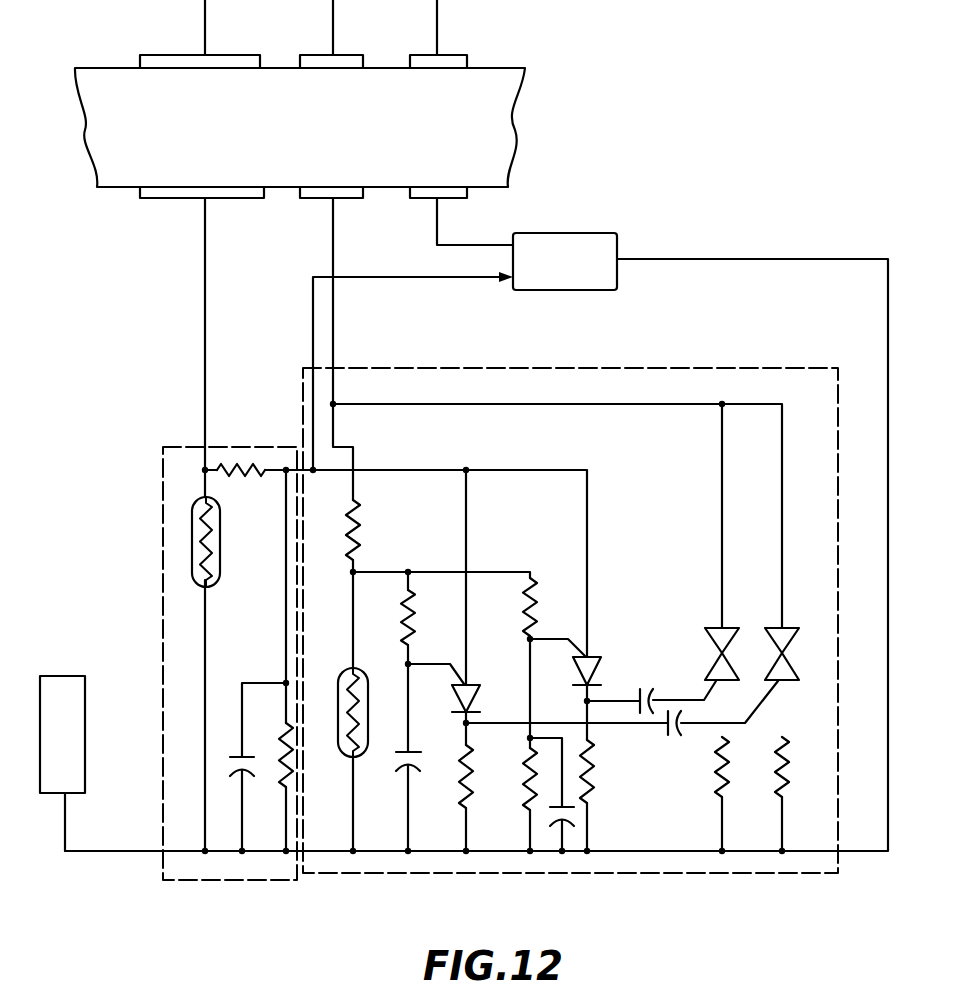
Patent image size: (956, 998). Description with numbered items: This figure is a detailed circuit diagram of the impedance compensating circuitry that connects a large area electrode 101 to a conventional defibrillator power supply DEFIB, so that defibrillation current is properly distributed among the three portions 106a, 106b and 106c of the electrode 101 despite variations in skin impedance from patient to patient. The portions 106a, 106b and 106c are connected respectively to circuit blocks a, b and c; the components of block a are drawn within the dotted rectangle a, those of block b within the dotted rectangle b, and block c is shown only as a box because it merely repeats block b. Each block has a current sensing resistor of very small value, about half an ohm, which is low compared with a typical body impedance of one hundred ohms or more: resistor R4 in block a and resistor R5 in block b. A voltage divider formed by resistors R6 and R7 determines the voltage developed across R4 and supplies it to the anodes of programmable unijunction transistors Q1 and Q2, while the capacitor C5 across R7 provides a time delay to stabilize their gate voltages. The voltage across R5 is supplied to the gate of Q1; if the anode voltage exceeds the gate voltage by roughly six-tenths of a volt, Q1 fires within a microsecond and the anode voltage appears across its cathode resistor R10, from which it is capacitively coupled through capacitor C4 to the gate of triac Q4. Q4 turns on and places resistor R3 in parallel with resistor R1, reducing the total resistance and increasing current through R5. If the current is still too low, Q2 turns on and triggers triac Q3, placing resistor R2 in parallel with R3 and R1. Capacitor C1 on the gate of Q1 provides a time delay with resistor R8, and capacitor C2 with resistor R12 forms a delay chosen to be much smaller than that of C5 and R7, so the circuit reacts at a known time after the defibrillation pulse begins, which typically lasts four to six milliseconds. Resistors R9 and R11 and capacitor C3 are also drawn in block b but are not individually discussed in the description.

The electrode 101 is at (360, 142).
The electrode portion 106a is at (181, 198).
The electrode portion 106b is at (318, 198).
The electrode portion 106c is at (428, 198).
The block a is at (182, 447).
The block b is at (422, 368).
The block c is at (565, 261).
The defibrillator power supply DEFIB is at (62, 763).
The resistor R1 is at (371, 530).
The resistor R2 is at (706, 767).
The resistor R3 is at (769, 767).
The current sensing resistor R4 is at (227, 544).
The current sensing resistor R5 is at (371, 712).
The resistor R6 is at (242, 488).
The resistor R7 is at (270, 755).
The resistor R8 is at (391, 617).
The resistor R9 is at (547, 607).
The cathode resistor R10 is at (449, 777).
The resistor R11 is at (612, 771).
The resistor R12 is at (511, 779).
The capacitor C1 is at (422, 748).
The capacitor C2 is at (554, 829).
The capacitor C3 is at (663, 690).
The capacitor C4 is at (672, 738).
The capacitor C5 is at (231, 751).
The programmable unijunction transistor Q1 is at (459, 687).
The programmable unijunction transistor Q2 is at (580, 657).
The triac Q3 is at (696, 664).
The triac Q4 is at (757, 675).